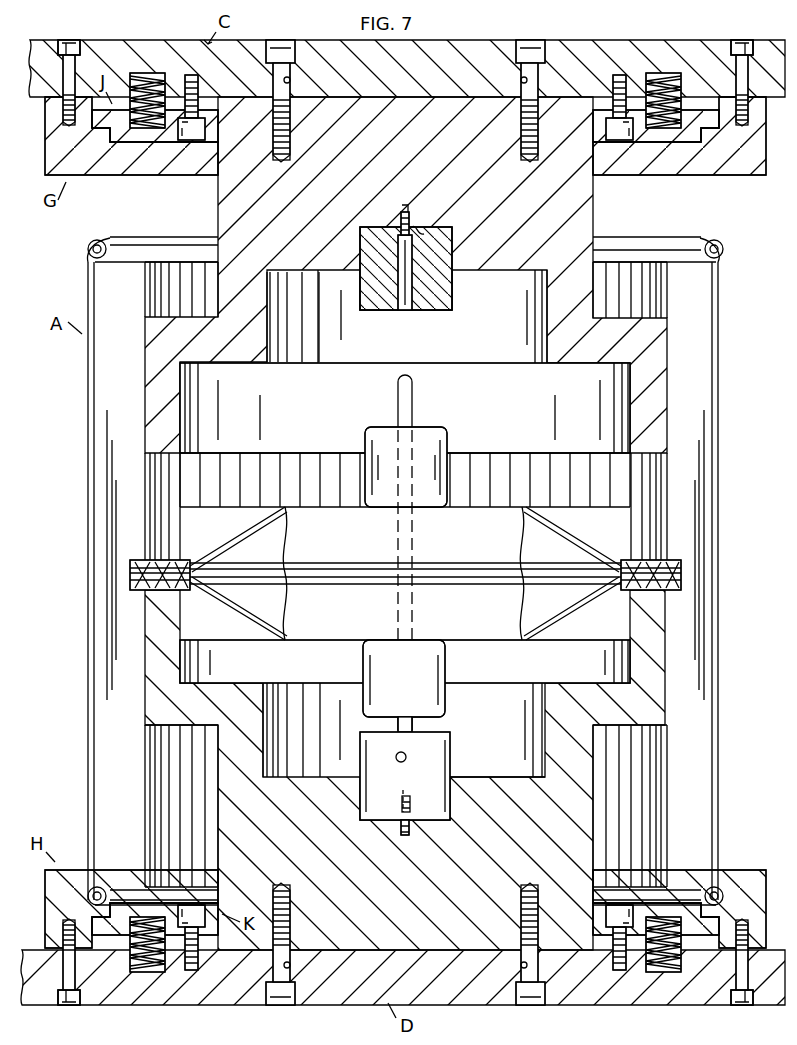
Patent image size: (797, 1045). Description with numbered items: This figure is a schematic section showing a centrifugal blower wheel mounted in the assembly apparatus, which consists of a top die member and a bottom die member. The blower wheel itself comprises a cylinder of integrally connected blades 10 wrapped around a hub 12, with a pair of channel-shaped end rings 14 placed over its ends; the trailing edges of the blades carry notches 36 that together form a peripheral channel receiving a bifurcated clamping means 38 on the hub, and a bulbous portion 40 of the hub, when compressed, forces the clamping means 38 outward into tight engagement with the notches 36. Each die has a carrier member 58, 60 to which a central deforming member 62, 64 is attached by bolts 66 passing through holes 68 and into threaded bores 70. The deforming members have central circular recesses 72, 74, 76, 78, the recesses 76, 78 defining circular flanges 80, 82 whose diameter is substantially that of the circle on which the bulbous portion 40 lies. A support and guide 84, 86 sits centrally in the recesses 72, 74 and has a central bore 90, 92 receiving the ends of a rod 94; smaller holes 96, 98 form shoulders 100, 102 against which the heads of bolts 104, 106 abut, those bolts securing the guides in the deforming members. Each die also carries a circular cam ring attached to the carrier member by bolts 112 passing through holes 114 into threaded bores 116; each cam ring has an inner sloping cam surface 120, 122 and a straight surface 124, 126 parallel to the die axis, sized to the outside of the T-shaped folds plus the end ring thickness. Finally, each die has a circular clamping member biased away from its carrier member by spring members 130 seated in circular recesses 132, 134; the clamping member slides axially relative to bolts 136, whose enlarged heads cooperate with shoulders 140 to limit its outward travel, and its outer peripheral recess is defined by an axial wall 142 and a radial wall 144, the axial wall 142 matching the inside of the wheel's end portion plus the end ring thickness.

The blades 10 is at (92, 440).
The hub 12 is at (240, 535).
The end rings 14 is at (85, 248).
The notch 36 is at (138, 560).
The bifurcated clamping means 38 is at (140, 590).
The bulbous portion 40 is at (655, 592).
The carrier member 58 is at (445, 46).
The carrier member 60 is at (470, 1003).
The deforming member 62 is at (500, 265).
The deforming member 64 is at (522, 795).
The bolts 66 is at (282, 50).
The holes 68 is at (291, 80).
The threaded bores 70 is at (275, 130).
The central circular recess 72 is at (540, 312).
The central circular recess 74 is at (545, 698).
The circular recess 76 is at (622, 400).
The circular recess 78 is at (622, 659).
The circular flange 80 is at (660, 400).
The circular flange 82 is at (655, 655).
The support and guide 84 is at (382, 305).
The support and guide 86 is at (448, 742).
The central bore 90 is at (406, 310).
The central bore 92 is at (396, 756).
The rod 94 is at (412, 400).
The hole 96 is at (400, 214).
The hole 98 is at (402, 808).
The shoulder 100 is at (415, 238).
The shoulder 102 is at (402, 797).
The bolt 104 is at (405, 205).
The bolt 106 is at (409, 835).
The bolts 112 is at (64, 42).
The holes 114 is at (75, 45).
The threaded bores 116 is at (63, 110).
The inner sloping cam surface 120 is at (78, 155).
The inner sloping cam surface 122 is at (730, 880).
The straight surface 124 is at (712, 95).
The straight surface 126 is at (705, 960).
The spring members 130 is at (160, 72).
The circular recess 132 is at (140, 130).
The circular recess 134 is at (145, 72).
The bolts 136 is at (198, 80).
The shoulders 140 is at (190, 140).
The axial wall 142 is at (705, 135).
The radial wall 144 is at (712, 138).